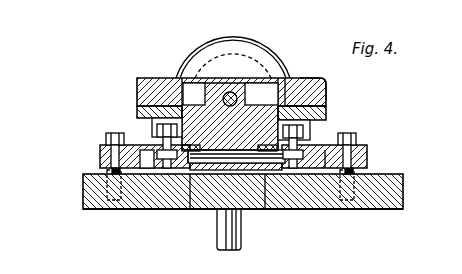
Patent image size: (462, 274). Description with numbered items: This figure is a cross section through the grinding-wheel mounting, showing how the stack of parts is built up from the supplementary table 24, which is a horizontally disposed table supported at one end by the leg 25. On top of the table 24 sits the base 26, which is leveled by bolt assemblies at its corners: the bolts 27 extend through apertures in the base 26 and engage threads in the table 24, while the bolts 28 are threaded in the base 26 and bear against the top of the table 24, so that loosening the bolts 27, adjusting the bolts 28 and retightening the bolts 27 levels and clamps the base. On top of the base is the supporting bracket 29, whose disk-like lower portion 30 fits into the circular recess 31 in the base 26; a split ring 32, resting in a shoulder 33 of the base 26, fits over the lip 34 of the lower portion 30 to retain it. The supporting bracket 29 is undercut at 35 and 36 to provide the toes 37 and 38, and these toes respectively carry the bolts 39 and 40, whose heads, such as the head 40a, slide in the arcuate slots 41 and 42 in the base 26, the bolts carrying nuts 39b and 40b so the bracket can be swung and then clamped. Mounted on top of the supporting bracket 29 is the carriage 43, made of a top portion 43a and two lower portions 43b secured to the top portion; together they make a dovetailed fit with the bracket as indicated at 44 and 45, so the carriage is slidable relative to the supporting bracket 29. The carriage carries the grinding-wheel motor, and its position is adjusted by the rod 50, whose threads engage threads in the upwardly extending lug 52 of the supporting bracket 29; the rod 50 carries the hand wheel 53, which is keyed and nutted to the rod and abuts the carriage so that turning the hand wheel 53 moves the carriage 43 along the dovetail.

The supplementary table 24 is at (167, 200).
The leg 25 is at (221, 253).
The base 26 is at (366, 158).
The bolt 27 is at (104, 187).
The bolt 28 is at (108, 168).
The supporting bracket 29 is at (259, 128).
The lower portion 30 is at (249, 152).
The circular recess 31 is at (193, 210).
The split ring 32 is at (275, 152).
The shoulder 33 is at (282, 162).
The lip 34 is at (268, 212).
The undercut 35 is at (308, 126).
The undercut 36 is at (152, 118).
The toe 37 is at (354, 136).
The toe 38 is at (157, 130).
The bolt 39 is at (100, 144).
The nut 39b is at (152, 127).
The bolt 40 is at (362, 147).
The head 40a is at (326, 158).
The nut 40b is at (315, 133).
The arcuate slot 41 is at (147, 160).
The arcuate slot 42 is at (294, 157).
The carriage 43 is at (308, 83).
The top portion 43a is at (331, 80).
The lower portion 43b is at (140, 108).
The dovetailed fit 44 is at (177, 112).
The dovetailed fit 45 is at (298, 88).
The rod 50 is at (243, 88).
The lug 52 is at (228, 95).
The hand wheel 53 is at (236, 38).